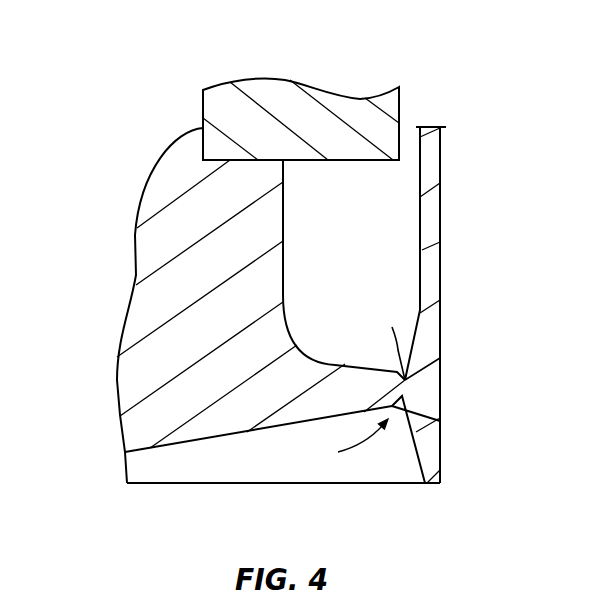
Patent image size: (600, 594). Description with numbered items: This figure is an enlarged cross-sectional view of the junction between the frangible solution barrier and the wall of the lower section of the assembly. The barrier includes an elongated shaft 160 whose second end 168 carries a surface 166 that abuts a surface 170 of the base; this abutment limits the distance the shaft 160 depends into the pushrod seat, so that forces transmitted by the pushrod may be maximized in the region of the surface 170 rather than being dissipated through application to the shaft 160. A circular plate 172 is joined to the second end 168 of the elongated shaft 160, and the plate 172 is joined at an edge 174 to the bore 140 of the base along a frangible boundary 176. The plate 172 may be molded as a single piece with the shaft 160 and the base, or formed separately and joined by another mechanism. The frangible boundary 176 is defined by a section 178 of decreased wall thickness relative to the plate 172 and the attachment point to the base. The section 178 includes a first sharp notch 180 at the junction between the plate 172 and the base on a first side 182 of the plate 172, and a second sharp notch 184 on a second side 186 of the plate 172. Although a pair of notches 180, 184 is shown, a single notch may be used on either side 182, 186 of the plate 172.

The bore 140 is at (440, 288).
The elongated shaft 160 is at (225, 321).
The surface 166 is at (301, 101).
The second end 168 is at (178, 198).
The surface 170 is at (246, 160).
The circular plate 172 is at (153, 430).
The edge 174 is at (440, 373).
The frangible boundary 176 is at (343, 445).
The section of decreased wall thickness 178 is at (379, 385).
The first sharp notch 180 is at (381, 341).
The first side 182 is at (305, 345).
The second sharp notch 184 is at (440, 425).
The second side 186 is at (263, 423).